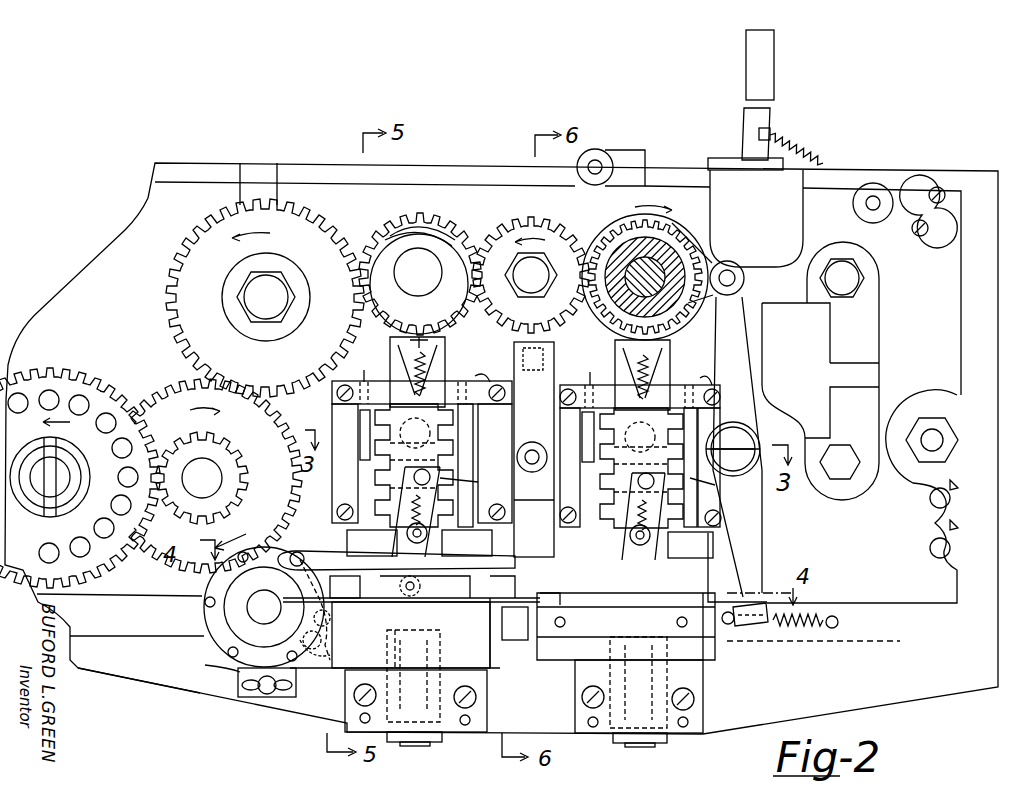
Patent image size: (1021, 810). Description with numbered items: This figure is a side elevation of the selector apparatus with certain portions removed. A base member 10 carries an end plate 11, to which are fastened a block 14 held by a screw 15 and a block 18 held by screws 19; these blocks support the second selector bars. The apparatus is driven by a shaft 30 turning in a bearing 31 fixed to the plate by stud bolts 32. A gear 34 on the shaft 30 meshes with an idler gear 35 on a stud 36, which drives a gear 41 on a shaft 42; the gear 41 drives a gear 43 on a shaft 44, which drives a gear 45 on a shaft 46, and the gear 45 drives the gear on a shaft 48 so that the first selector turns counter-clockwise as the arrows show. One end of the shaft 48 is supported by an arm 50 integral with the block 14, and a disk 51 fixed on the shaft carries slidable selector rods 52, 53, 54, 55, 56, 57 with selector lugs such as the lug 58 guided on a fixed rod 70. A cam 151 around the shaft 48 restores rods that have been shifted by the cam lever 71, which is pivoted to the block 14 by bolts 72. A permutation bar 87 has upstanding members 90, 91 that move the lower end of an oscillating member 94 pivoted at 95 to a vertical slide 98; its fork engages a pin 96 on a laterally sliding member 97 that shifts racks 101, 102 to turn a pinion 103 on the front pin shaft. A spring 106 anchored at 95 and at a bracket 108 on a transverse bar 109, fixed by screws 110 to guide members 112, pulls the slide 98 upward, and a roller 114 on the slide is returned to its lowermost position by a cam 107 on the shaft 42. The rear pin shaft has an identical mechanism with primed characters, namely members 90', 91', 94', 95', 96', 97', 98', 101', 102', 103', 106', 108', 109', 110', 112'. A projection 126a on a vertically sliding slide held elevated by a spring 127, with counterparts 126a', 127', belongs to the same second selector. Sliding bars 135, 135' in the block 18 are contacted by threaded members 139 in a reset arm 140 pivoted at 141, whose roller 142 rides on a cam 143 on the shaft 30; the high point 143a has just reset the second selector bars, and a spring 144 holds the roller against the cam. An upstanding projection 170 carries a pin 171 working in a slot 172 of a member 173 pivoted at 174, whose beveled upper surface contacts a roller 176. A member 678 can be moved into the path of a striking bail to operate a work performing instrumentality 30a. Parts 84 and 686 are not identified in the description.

The base member 10 is at (120, 668).
The end plate 11 is at (88, 272).
The block 14 is at (492, 670).
The screw 15 is at (500, 697).
The block 18 is at (690, 720).
The screws 19 is at (582, 697).
The shaft 30 is at (622, 269).
The work performing instrumentality 30a is at (770, 60).
The bearing 31 is at (860, 422).
The stud bolts 32 is at (865, 278).
The gear 34 is at (535, 195).
The idler gear 35 is at (520, 232).
The stud 36 is at (531, 275).
The gear 41 is at (416, 224).
The shaft 42 is at (418, 272).
The gear 43 is at (314, 218).
The shaft 44 is at (266, 297).
The gear 45 is at (176, 392).
The shaft 46 is at (202, 478).
The shaft 48 is at (264, 607).
The arm 50 is at (262, 634).
The disk 51 is at (208, 617).
The selector rod 52 is at (295, 551).
The selector rod 53 is at (290, 554).
The selector rod 54 is at (200, 597).
The selector rod 55 is at (215, 664).
The selector rod 56 is at (285, 691).
The selector rod 57 is at (332, 618).
The selector lug 58 is at (333, 648).
The rod 70 is at (316, 624).
The cam lever 71 is at (430, 586).
The bolts 72 is at (372, 544).
The plate 84 is at (411, 635).
The permutation bar 87 is at (485, 640).
The upwardly projecting member 90 is at (467, 544).
The upwardly projecting member 90' is at (690, 552).
The upwardly projecting member 91 is at (346, 583).
The upwardly projecting member 91' is at (630, 487).
The oscillating member 94 is at (416, 512).
The oscillating member 94' is at (643, 518).
The pivot 95 is at (394, 535).
The pivot 95' is at (662, 540).
The pin 96 is at (458, 481).
The pin 96' is at (722, 491).
The laterally sliding member 97 is at (438, 465).
The laterally sliding member 97' is at (733, 458).
The vertically disposed slide 98 is at (431, 372).
The vertically disposed slide 98' is at (661, 370).
The rack 101 is at (470, 383).
The rack 101' is at (683, 387).
The rack 102 is at (373, 372).
The rack 102' is at (585, 376).
The pinion 103 is at (349, 463).
The pinion 103' is at (571, 467).
The spring 106 is at (414, 447).
The spring 106' is at (598, 378).
The cam 107 is at (419, 280).
The bracket 108 is at (405, 377).
The bracket 108' is at (630, 380).
The transverse bar 109 is at (494, 368).
The transverse bar 109' is at (697, 367).
The screws 110 is at (402, 398).
The screws 110' is at (618, 406).
The guide members 112 is at (420, 465).
The guide members 112' is at (635, 467).
The roller 114 is at (443, 337).
The projection 126a is at (429, 696).
The projection 126a' is at (615, 698).
The spring 127 is at (414, 751).
The spring 127' is at (642, 750).
The sliding bar 135 is at (608, 626).
The sliding bar 135' is at (717, 596).
The threaded member 139 is at (727, 638).
The reset arm 140 is at (745, 364).
The pivot 141 is at (745, 437).
The roller 142 is at (737, 268).
The cam 143 is at (712, 242).
The high point 143a is at (749, 439).
The spring 144 is at (818, 610).
The cam 151 is at (238, 683).
The upstanding projection 170 is at (558, 590).
The pin 171 is at (534, 449).
The slot 172 is at (504, 586).
The vertically disposed member 173 is at (534, 511).
The pivot 174 is at (531, 448).
The roller 176 is at (552, 353).
The member 678 is at (772, 120).
The spring 686 is at (802, 148).